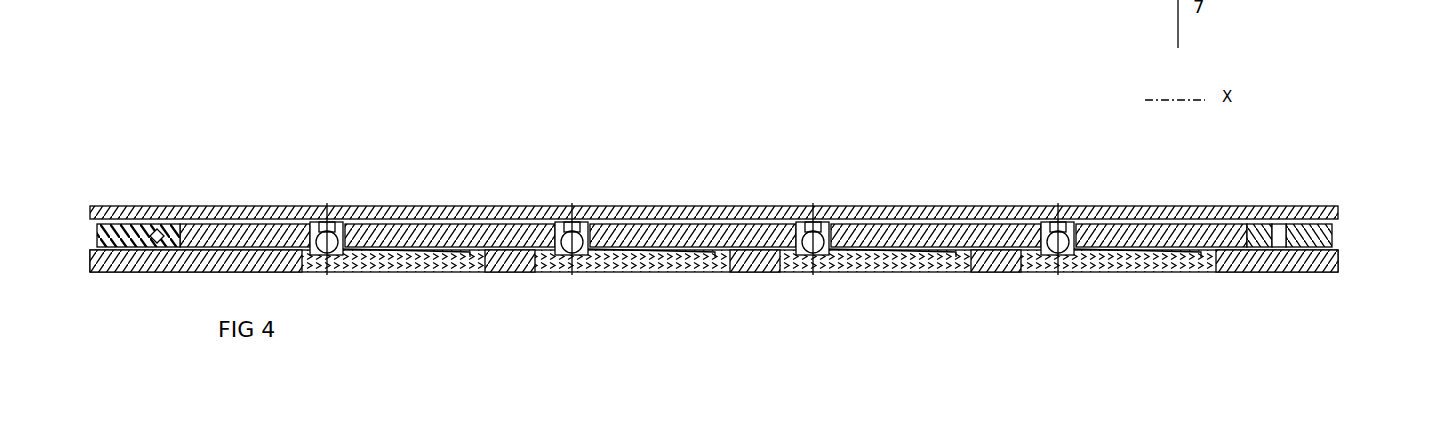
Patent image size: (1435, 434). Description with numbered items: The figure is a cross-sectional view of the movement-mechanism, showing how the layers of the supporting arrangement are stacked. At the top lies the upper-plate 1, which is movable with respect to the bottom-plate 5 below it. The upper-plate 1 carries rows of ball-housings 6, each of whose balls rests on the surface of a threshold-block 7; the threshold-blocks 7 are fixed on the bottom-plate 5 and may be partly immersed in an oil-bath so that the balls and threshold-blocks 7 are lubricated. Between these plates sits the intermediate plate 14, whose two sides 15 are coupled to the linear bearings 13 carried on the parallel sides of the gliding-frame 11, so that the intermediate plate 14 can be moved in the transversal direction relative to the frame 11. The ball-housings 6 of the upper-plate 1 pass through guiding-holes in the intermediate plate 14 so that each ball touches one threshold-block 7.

The upper-plate 1 is at (714, 166).
The bottom-plate 5 is at (714, 297).
The ball-housings 6 is at (692, 274).
The threshold-blocks 7 is at (770, 297).
The gliding-frame 11 is at (1295, 179).
The linear bearing 13 is at (1298, 284).
The intermediate plate 14 is at (713, 180).
The sides 15 is at (138, 180).